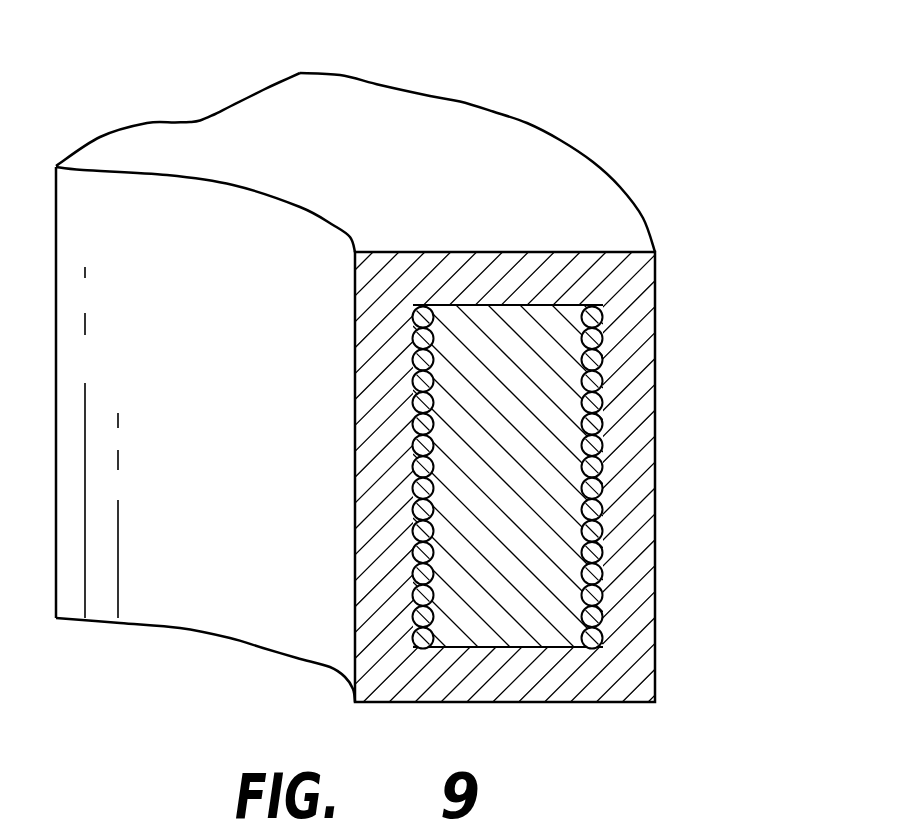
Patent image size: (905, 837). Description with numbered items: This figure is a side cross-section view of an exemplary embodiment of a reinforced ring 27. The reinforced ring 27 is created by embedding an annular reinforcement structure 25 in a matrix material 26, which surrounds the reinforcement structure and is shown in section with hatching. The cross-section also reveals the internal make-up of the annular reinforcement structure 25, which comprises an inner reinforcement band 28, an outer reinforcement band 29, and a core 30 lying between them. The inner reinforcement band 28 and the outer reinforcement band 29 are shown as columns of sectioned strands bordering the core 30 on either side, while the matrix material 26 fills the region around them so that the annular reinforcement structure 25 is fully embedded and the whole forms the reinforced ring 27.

The annular reinforcement structure 25 is at (605, 474).
The matrix material 26 is at (630, 648).
The reinforced ring 27 is at (120, 83).
The inner reinforcement band 28 is at (413, 593).
The outer reinforcement band 29 is at (600, 366).
The core 30 is at (522, 335).